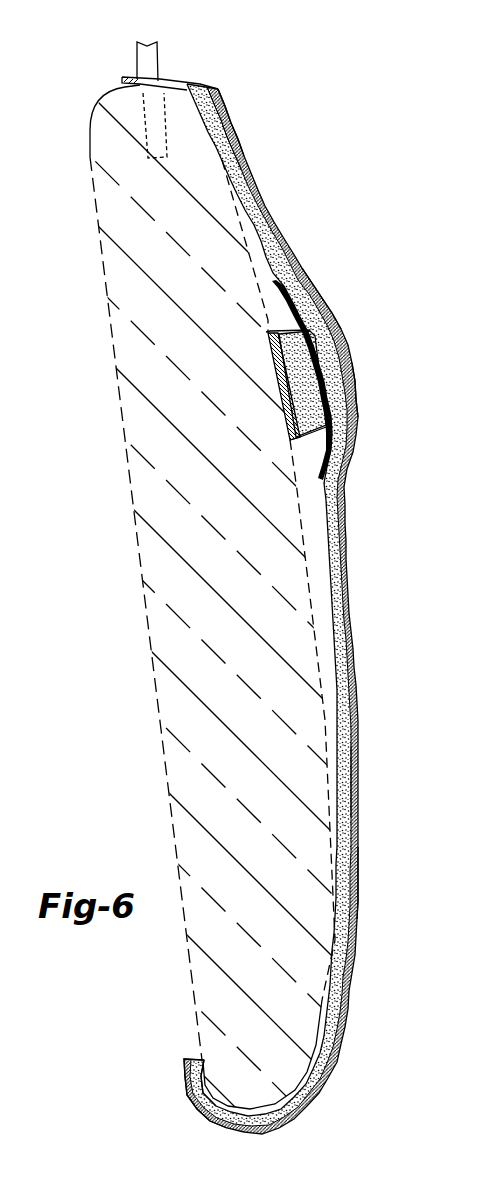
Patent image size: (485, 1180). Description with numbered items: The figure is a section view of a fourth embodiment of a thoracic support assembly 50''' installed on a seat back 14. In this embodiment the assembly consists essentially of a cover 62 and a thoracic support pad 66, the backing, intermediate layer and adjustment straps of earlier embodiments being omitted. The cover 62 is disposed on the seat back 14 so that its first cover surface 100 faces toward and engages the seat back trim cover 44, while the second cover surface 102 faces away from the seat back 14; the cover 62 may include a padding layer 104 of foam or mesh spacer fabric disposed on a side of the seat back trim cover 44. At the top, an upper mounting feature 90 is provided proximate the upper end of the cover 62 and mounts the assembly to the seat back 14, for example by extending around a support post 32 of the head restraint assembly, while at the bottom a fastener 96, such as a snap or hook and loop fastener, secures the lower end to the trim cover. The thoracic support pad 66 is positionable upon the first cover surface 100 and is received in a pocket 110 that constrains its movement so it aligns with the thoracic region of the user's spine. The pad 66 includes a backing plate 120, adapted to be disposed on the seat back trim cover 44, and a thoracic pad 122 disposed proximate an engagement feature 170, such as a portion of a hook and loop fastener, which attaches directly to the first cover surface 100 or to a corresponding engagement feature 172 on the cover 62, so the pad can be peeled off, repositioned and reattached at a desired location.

The seat back 14 is at (237, 578).
The support post 32 is at (137, 52).
The seat back trim cover 44 is at (127, 449).
The thoracic support assembly 50''' is at (282, 591).
The cover 62 is at (233, 118).
The thoracic support pad 66 is at (268, 343).
The upper mounting feature 90 is at (122, 78).
The fastener 96 is at (199, 1057).
The first cover surface 100 is at (333, 808).
The second cover surface 102 is at (360, 882).
The padding layer 104 is at (240, 147).
The pocket 110 is at (327, 298).
The backing plate 120 is at (273, 373).
The thoracic pad 122 is at (350, 382).
The engagement feature 170 is at (340, 343).
The engagement feature 172 is at (287, 318).